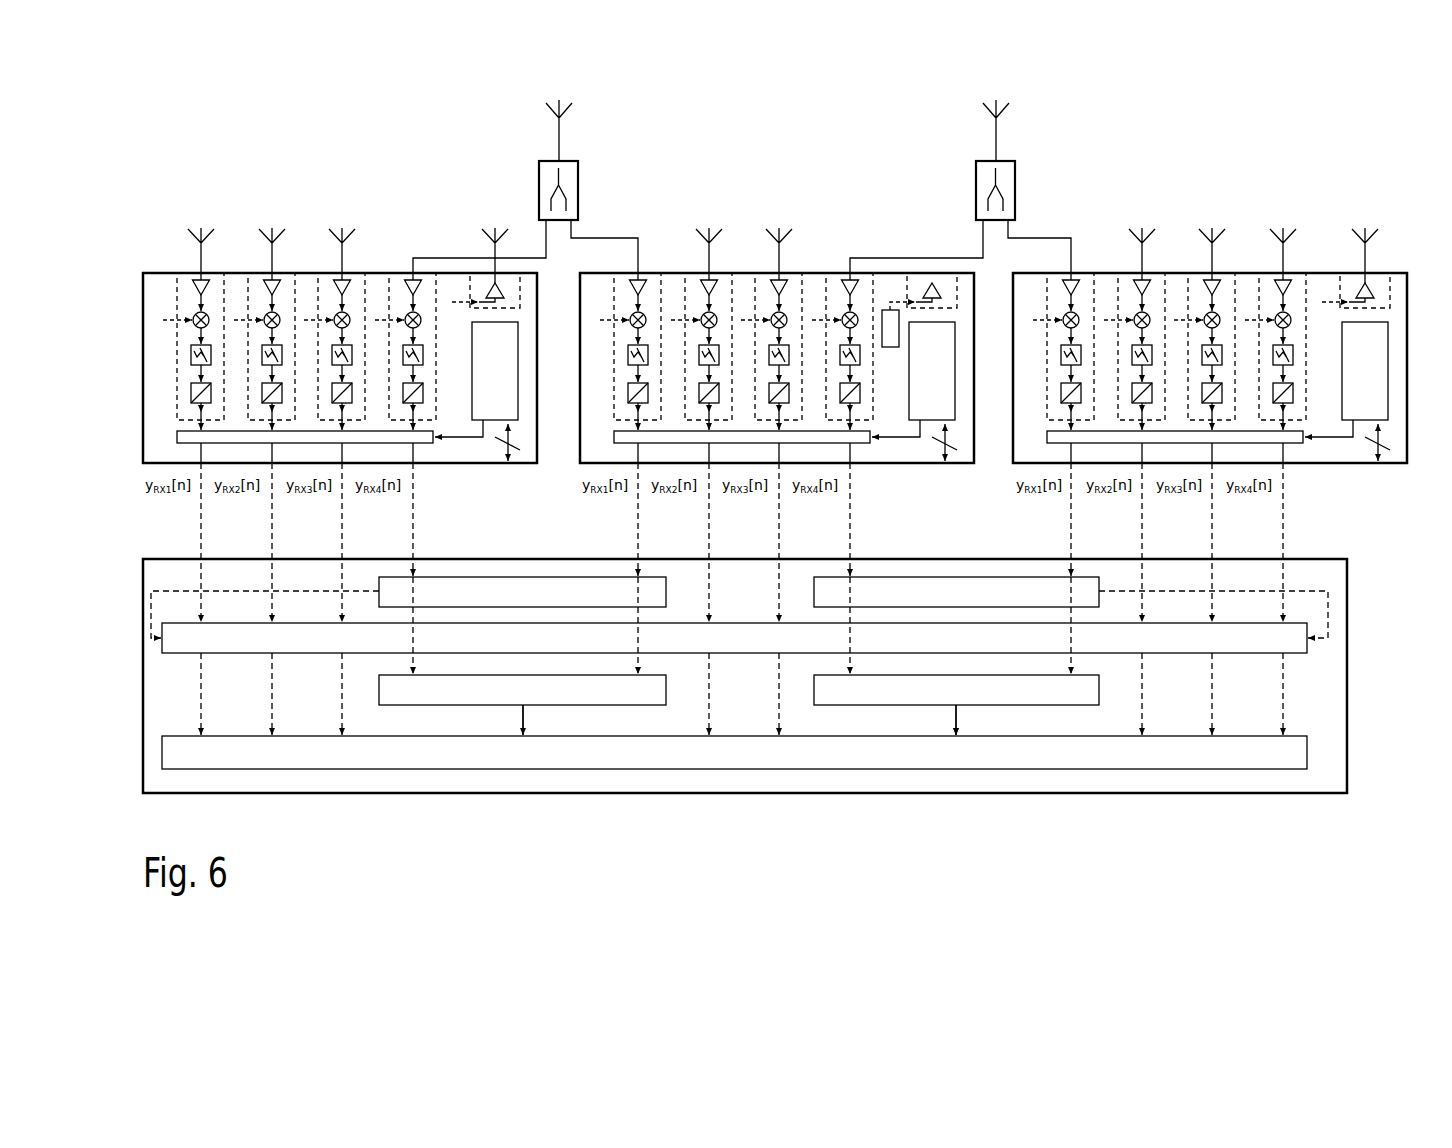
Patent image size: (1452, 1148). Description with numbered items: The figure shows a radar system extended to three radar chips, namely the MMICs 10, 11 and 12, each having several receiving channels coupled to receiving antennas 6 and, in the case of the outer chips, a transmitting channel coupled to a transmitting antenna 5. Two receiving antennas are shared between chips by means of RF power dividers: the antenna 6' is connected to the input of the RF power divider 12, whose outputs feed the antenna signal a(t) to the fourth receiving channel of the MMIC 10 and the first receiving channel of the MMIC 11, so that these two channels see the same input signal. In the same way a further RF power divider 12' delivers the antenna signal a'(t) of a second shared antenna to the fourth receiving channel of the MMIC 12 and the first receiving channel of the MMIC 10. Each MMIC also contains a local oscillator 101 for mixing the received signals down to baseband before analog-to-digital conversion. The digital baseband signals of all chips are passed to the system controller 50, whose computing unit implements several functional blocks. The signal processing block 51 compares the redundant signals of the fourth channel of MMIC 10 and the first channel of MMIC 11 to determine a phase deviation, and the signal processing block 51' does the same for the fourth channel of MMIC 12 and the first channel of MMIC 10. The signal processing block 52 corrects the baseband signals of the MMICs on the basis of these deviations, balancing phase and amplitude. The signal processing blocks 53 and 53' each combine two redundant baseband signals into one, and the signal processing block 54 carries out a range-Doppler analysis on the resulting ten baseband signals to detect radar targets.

The transmitting antenna 5 is at (925, 255).
The receiving antenna 6 is at (744, 254).
The receiving antenna 6' is at (1004, 130).
The MMIC 10 is at (789, 368).
The MMIC 11 is at (1222, 368).
The RF power divider 12 is at (648, 298).
The RF power divider 12' is at (568, 206).
The system controller 50 is at (745, 690).
The signal processing block 51 is at (956, 592).
The signal processing block 51' is at (522, 592).
The signal processing block 52 is at (734, 638).
The signal processing block 53 is at (956, 690).
The signal processing block 53' is at (522, 690).
The signal processing block 54 is at (734, 752).
The local oscillator 101 is at (893, 347).